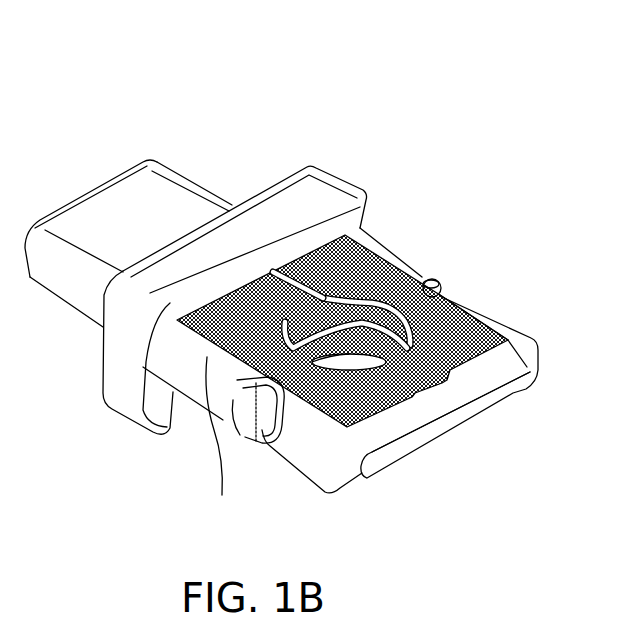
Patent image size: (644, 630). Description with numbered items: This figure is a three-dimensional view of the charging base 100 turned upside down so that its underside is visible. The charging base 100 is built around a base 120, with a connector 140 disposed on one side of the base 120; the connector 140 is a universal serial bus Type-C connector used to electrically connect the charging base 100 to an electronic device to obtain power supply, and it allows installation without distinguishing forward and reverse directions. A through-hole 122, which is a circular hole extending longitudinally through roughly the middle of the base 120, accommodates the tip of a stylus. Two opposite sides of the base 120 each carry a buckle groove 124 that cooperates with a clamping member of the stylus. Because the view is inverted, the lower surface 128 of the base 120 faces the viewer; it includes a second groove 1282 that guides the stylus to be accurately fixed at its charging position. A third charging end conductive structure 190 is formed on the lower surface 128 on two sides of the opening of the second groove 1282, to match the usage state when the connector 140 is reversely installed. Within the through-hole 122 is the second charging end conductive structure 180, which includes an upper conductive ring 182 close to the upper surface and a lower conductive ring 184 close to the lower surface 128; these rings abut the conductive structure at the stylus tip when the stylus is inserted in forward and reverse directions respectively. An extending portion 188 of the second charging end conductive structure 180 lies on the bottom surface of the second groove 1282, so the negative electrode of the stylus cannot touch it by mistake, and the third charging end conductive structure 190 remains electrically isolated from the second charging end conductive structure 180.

The charging base 100 is at (318, 110).
The base 120 is at (394, 250).
The through-hole 122 is at (347, 306).
The buckle groove 124 is at (455, 291).
The lower surface 128 is at (242, 443).
The second groove 1282 is at (263, 284).
The connector 140 is at (106, 192).
The second charging end conductive structure 180 is at (547, 456).
The upper conductive ring 182 is at (358, 374).
The lower conductive ring 184 is at (336, 368).
The extending portion 188 is at (433, 387).
The third charging end conductive structure 190 is at (474, 337).